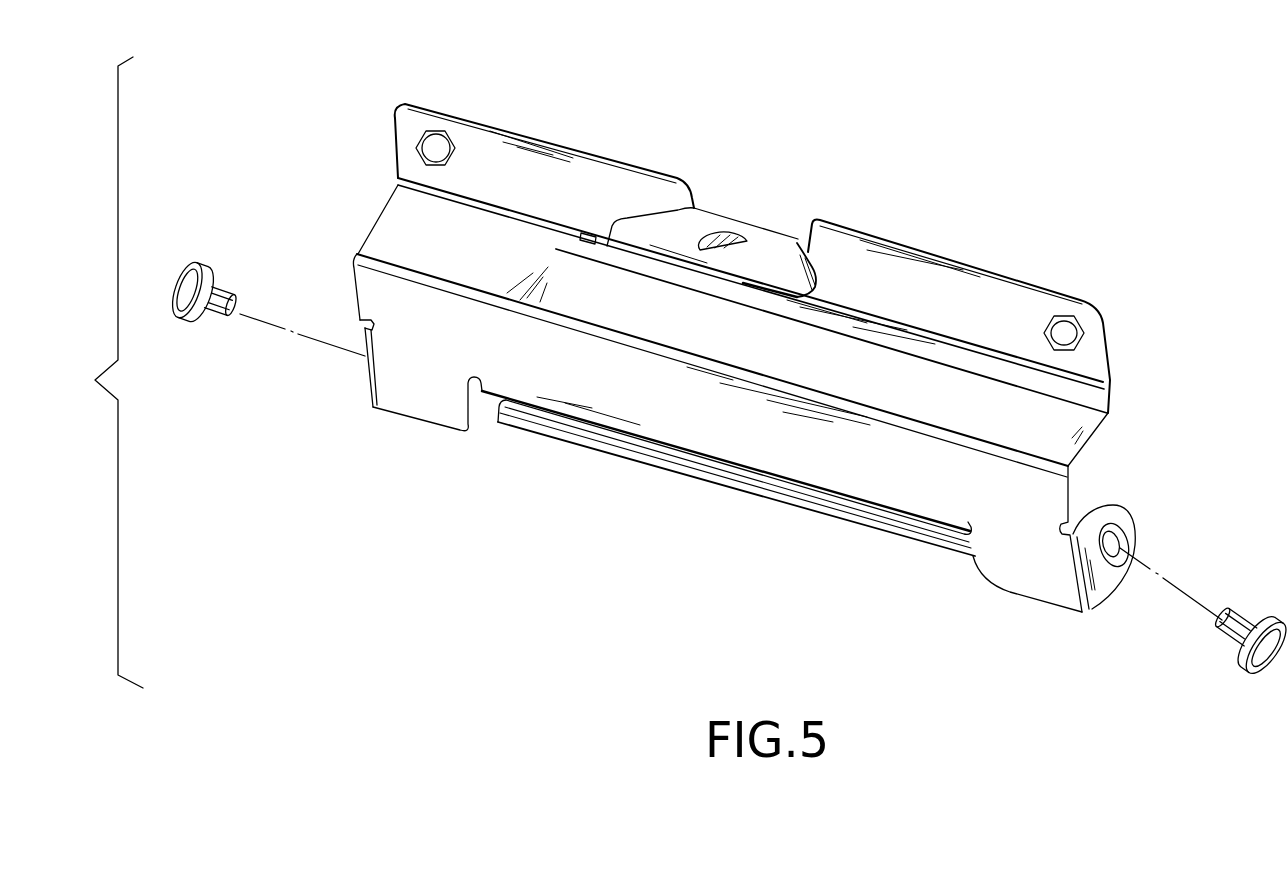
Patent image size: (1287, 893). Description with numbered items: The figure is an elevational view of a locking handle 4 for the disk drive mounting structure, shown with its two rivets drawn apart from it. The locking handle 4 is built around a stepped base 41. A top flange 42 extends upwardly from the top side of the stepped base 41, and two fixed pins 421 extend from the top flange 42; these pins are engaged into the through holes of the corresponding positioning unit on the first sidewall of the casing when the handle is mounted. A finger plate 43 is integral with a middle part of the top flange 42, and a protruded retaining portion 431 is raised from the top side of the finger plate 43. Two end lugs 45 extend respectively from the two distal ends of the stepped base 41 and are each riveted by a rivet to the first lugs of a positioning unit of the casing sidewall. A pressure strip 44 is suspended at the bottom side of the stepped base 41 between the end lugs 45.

The locking handle 4 is at (567, 137).
The stepped base 41 is at (385, 241).
The top flange 42 is at (628, 188).
The fixed pins 421 is at (466, 126).
The finger plate 43 is at (747, 285).
The protruded retaining portion 431 is at (728, 230).
The pressure strip 44 is at (716, 485).
The end lugs 45 is at (1116, 520).